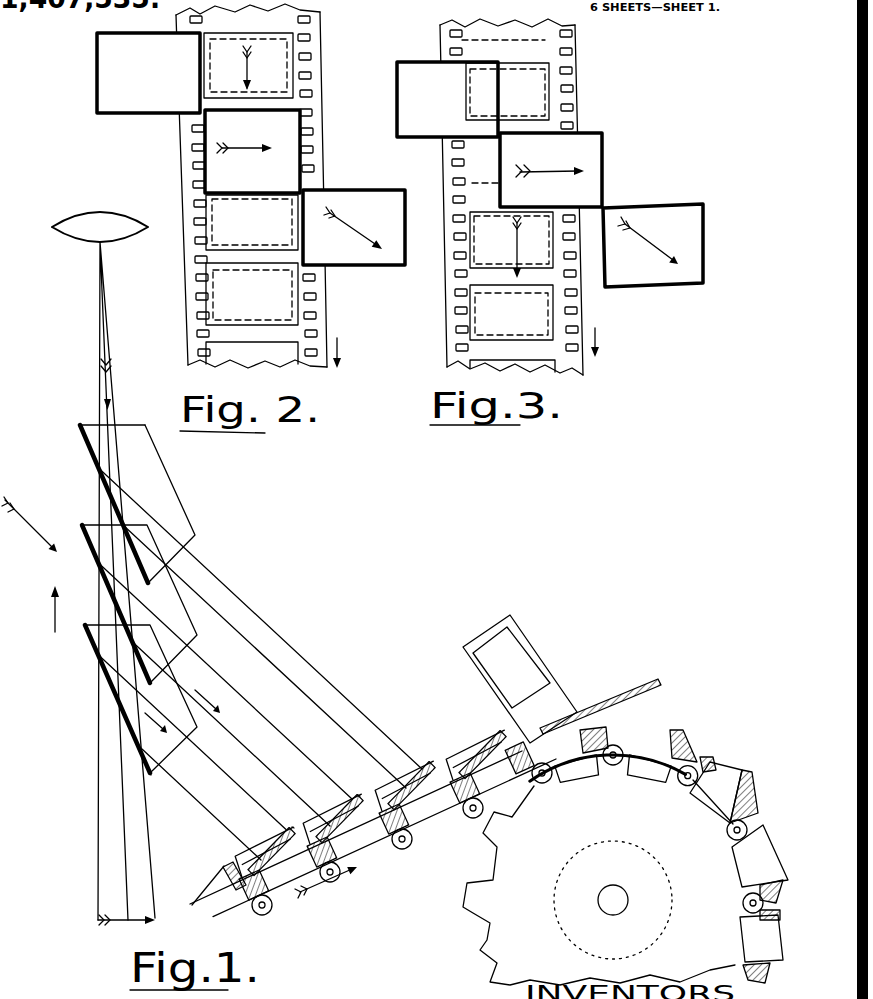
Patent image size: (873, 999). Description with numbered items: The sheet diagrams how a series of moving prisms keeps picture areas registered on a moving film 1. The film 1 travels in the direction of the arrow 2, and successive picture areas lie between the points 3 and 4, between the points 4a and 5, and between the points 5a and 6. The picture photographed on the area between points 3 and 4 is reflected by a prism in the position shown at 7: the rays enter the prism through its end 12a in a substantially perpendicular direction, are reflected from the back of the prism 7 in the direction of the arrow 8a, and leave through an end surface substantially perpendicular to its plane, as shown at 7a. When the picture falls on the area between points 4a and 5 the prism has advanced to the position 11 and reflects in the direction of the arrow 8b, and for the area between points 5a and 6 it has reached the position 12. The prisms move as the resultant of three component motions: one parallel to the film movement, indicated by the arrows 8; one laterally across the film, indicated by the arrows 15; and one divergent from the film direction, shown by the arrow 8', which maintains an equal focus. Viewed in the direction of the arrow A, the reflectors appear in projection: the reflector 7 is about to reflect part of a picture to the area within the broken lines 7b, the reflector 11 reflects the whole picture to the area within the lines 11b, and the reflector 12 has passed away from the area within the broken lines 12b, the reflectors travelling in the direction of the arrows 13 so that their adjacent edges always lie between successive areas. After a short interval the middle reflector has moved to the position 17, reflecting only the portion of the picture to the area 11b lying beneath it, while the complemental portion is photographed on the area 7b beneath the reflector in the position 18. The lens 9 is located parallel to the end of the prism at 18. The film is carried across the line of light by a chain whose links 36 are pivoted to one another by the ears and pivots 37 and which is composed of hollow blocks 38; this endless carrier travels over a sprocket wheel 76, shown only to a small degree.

In FIG. 1, the film 1 is at (216, 896).
In FIG. 2, the arrow 2 is at (341, 349).
In FIG. 3, the arrow 2 is at (600, 340).
In FIG. 1, the arrow 2 is at (326, 888).
In FIG. 1, the point 3 is at (258, 862).
In FIG. 1, the point 4 is at (268, 852).
In FIG. 1, the point 4a is at (311, 823).
In FIG. 1, the point 5 is at (349, 806).
In FIG. 1, the point 5a is at (388, 790).
In FIG. 1, the point 6 is at (427, 768).
In FIG. 2, the prism 7 is at (97, 108).
In FIG. 1, the prism 7 is at (97, 670).
In FIG. 1, the end surface of prism 7a is at (167, 767).
In FIG. 2, the picture area 7b is at (292, 62).
In FIG. 3, the picture area 7b is at (545, 79).
In FIG. 2, the arrows 8 is at (256, 68).
In FIG. 3, the arrows 8 is at (511, 245).
In FIG. 1, the arrows 8 is at (126, 583).
In FIG. 1, the arrow 8' is at (43, 611).
In FIG. 1, the arrow 8a is at (142, 747).
In FIG. 1, the arrow 8b is at (212, 702).
In FIG. 1, the lens 9 is at (113, 234).
In FIG. 2, the prism 11 is at (262, 197).
In FIG. 1, the prism 11 is at (96, 566).
In FIG. 2, the picture area 11b is at (302, 116).
In FIG. 3, the picture area 11b is at (474, 191).
In FIG. 2, the prism 12 is at (360, 266).
In FIG. 1, the prism 12 is at (89, 455).
In FIG. 1, the end of prism 12a is at (132, 424).
In FIG. 2, the picture area 12b is at (267, 250).
In FIG. 2, the arrows 13 is at (352, 231).
In FIG. 3, the arrows 13 is at (650, 243).
In FIG. 2, the arrows 15 is at (258, 150).
In FIG. 3, the arrows 15 is at (572, 178).
In FIG. 3, the reflector position 17 is at (472, 183).
In FIG. 3, the reflector position 18 is at (431, 140).
In FIG. 1, the links 36 is at (422, 828).
In FIG. 1, the ears and pivots 37 is at (402, 847).
In FIG. 1, the hollow blocks 38 is at (444, 805).
In FIG. 1, the sprocket wheel 76 is at (495, 933).
In FIG. 1, the arrow A is at (27, 525).